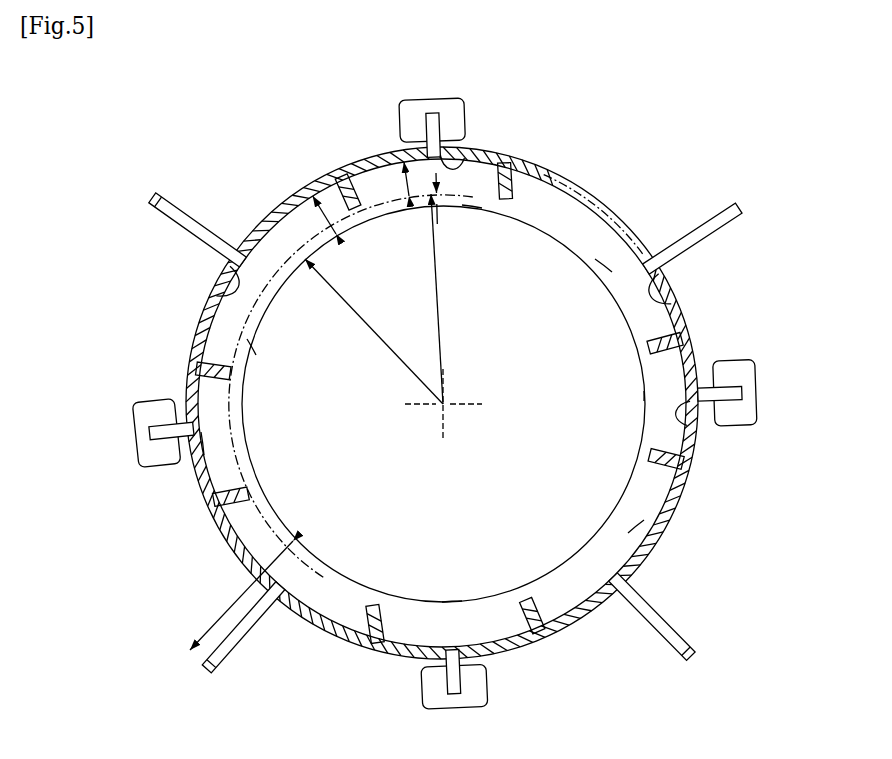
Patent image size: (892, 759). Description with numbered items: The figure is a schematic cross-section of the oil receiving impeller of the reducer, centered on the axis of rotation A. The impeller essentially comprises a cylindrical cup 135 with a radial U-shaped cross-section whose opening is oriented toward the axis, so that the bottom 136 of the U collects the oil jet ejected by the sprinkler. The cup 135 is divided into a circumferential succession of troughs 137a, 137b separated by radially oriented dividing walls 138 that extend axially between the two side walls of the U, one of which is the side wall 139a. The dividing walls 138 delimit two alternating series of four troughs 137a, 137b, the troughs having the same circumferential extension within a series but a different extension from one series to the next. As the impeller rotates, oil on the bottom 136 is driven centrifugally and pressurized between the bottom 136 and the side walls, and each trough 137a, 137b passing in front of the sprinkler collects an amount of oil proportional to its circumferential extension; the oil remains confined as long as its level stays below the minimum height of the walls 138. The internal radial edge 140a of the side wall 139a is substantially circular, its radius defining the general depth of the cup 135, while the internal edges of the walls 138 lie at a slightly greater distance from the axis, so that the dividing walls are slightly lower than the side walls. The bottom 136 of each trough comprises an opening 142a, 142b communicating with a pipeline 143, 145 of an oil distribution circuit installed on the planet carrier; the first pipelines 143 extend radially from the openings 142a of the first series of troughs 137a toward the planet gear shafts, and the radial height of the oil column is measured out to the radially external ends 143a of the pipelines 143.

The cylindrical cup 135 is at (749, 149).
The bottom 136 is at (600, 206).
The trough 137a is at (605, 268).
The trough 137b is at (472, 205).
The radially oriented dividing wall 138 is at (340, 178).
The side wall 139a is at (558, 216).
The internal radial edge 140a is at (520, 223).
The opening 142a is at (232, 283).
The opening 142b is at (466, 158).
The first pipeline 143 is at (158, 195).
The radially external end of the pipeline 143a is at (203, 662).
The second pipeline 145 is at (424, 127).